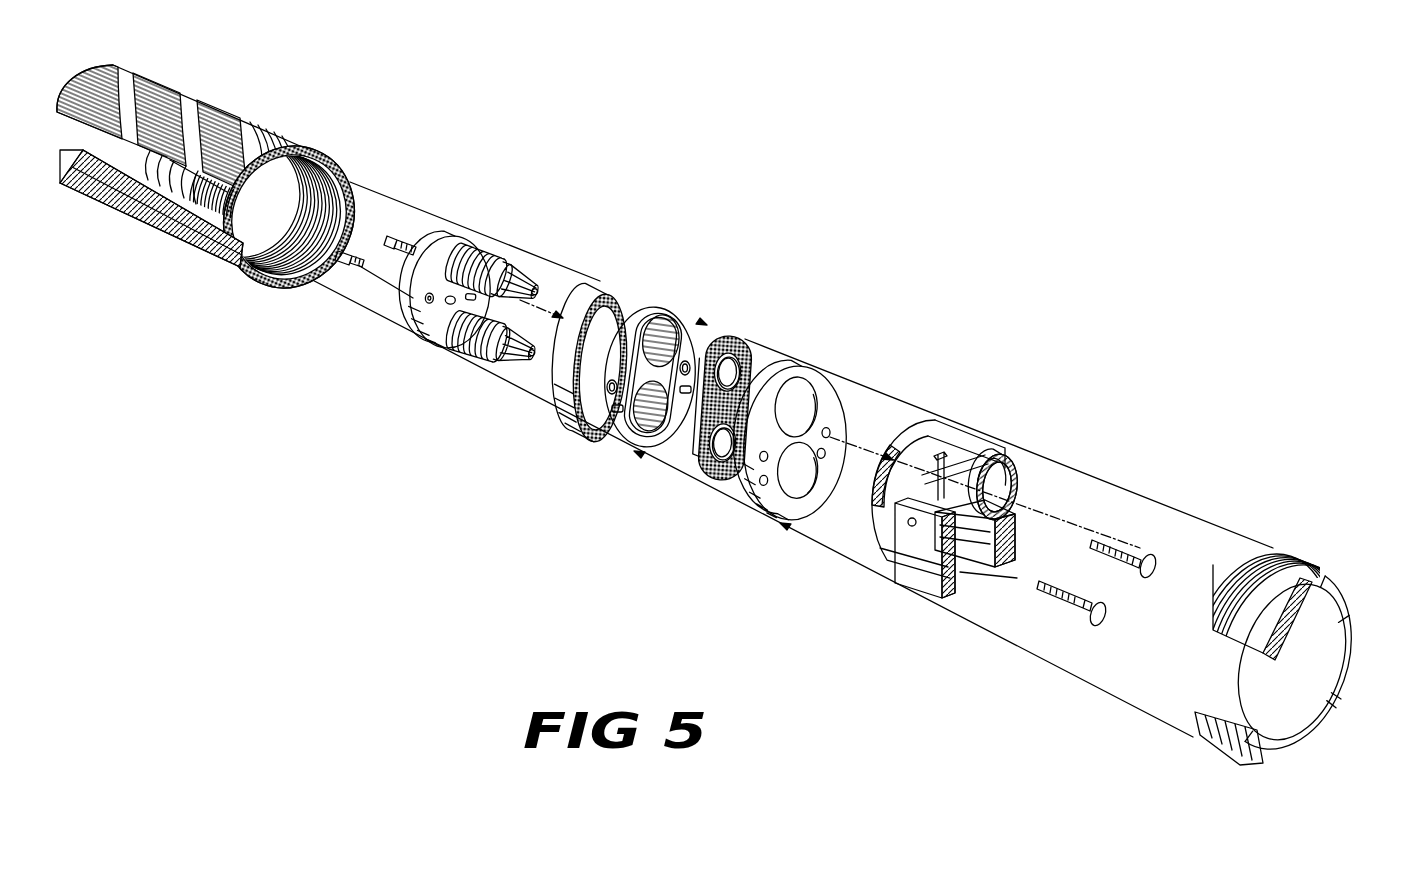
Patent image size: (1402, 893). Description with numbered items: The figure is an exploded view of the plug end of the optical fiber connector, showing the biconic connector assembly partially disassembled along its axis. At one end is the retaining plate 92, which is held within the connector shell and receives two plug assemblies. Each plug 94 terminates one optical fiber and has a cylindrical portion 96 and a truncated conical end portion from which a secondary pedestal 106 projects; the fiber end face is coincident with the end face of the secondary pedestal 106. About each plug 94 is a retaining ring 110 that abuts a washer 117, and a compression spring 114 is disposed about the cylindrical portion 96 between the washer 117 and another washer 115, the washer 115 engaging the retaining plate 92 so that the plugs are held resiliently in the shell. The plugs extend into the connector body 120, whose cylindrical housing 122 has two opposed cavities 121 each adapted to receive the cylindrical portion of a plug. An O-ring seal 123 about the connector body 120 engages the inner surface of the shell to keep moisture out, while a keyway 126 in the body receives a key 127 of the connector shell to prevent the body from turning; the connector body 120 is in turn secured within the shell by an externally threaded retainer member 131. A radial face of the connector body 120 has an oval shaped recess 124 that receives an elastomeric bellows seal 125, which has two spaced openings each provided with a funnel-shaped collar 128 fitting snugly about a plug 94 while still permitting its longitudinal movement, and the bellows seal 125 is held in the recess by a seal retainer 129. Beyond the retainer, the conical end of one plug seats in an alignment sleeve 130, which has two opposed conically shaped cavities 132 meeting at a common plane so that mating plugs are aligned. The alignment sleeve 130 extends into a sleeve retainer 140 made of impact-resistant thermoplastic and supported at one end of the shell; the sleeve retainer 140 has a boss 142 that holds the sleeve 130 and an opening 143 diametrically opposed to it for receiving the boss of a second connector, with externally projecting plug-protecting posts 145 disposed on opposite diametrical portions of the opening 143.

The retaining plate 92 is at (447, 246).
The plug 94 is at (537, 284).
The cylindrical portion 96 is at (510, 333).
The secondary pedestal 106 is at (522, 357).
The retaining ring 110 is at (491, 297).
The compression spring 114 is at (473, 357).
The washer 115 is at (447, 270).
The washer 117 is at (493, 253).
The connector body 120 is at (680, 300).
The cavity 121 is at (675, 348).
The cylindrical housing 122 is at (563, 417).
The O-ring seal 123 is at (653, 298).
The oval shaped recess 124 is at (743, 347).
The bellows seal 125 is at (743, 378).
The keyway 126 is at (617, 297).
The key 127 is at (227, 234).
The funnel-shaped collar 128 is at (703, 463).
The seal retainer 129 is at (845, 422).
The alignment sleeve 130 is at (1013, 483).
The externally threaded retainer member 131 is at (1345, 580).
The conically shaped cavity 132 is at (997, 500).
The sleeve retainer 140 is at (1010, 448).
The boss 142 is at (910, 440).
The opening 143 is at (977, 580).
The plug-protecting post 145 is at (1010, 543).